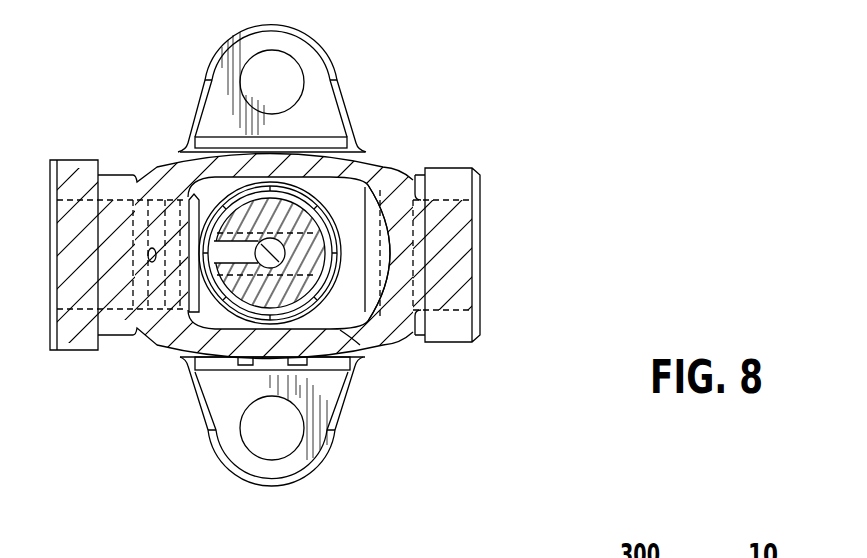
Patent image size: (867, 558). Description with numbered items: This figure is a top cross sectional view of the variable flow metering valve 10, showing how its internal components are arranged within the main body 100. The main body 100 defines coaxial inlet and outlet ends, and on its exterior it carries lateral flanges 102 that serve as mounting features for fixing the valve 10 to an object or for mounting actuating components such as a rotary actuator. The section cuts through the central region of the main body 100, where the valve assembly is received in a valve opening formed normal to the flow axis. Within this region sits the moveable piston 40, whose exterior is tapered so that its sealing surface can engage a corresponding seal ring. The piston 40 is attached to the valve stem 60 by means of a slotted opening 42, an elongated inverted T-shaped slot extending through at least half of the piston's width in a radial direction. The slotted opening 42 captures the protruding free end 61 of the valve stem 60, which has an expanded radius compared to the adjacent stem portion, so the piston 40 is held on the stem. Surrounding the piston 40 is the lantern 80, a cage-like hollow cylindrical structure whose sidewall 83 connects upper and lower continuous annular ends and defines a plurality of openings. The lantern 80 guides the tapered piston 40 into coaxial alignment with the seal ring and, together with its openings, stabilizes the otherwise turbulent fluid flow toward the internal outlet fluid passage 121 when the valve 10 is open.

The variable flow metering valve 10 is at (380, 112).
The piston 40 is at (313, 232).
The slotted opening 42 is at (216, 248).
The valve stem 60 is at (268, 268).
The free end 61 is at (199, 265).
The lantern 80 is at (345, 300).
The sidewall 83 is at (355, 338).
The main body 100 is at (398, 343).
The lateral flanges 102 is at (212, 66).
The internal outlet fluid passage 121 is at (386, 262).